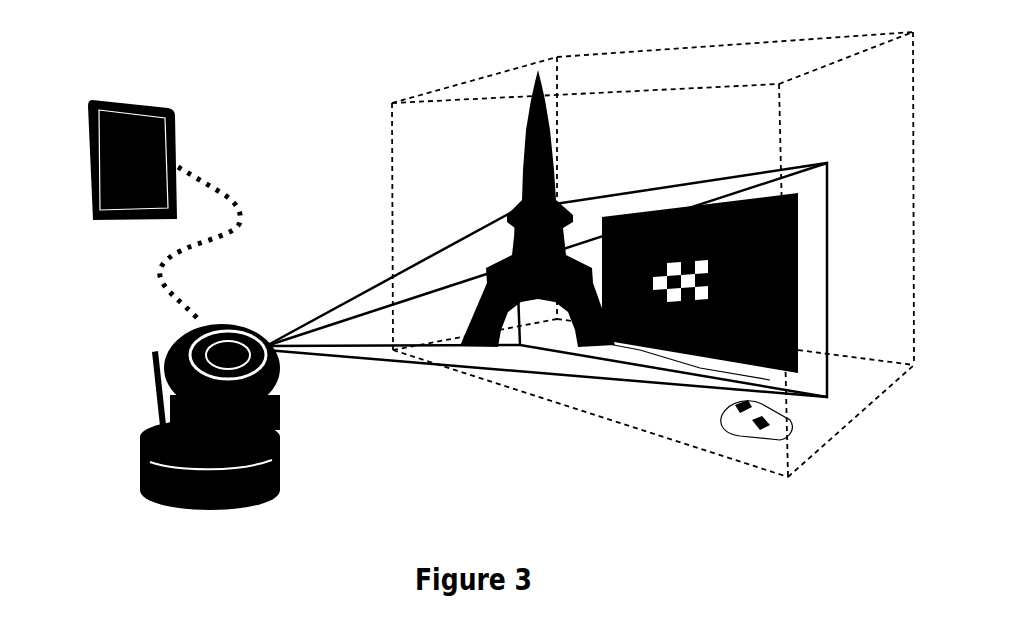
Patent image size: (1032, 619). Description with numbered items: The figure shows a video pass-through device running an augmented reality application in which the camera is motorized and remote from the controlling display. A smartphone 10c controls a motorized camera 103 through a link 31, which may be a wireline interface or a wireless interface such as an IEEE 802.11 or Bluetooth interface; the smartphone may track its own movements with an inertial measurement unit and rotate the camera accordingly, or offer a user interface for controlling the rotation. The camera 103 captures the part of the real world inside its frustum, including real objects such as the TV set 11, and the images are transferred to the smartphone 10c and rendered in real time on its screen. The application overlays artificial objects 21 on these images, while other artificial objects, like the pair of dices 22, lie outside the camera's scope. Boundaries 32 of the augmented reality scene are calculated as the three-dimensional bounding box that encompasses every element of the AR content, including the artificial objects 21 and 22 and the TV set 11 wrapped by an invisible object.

The smartphone 10c is at (113, 100).
The link 31 is at (228, 193).
The motorized camera 103 is at (140, 470).
The boundaries of the augmented reality scene 32 is at (487, 75).
The artificial object 21 is at (520, 162).
The TV set (real object) 11 is at (800, 282).
The pair of dices 22 is at (755, 440).